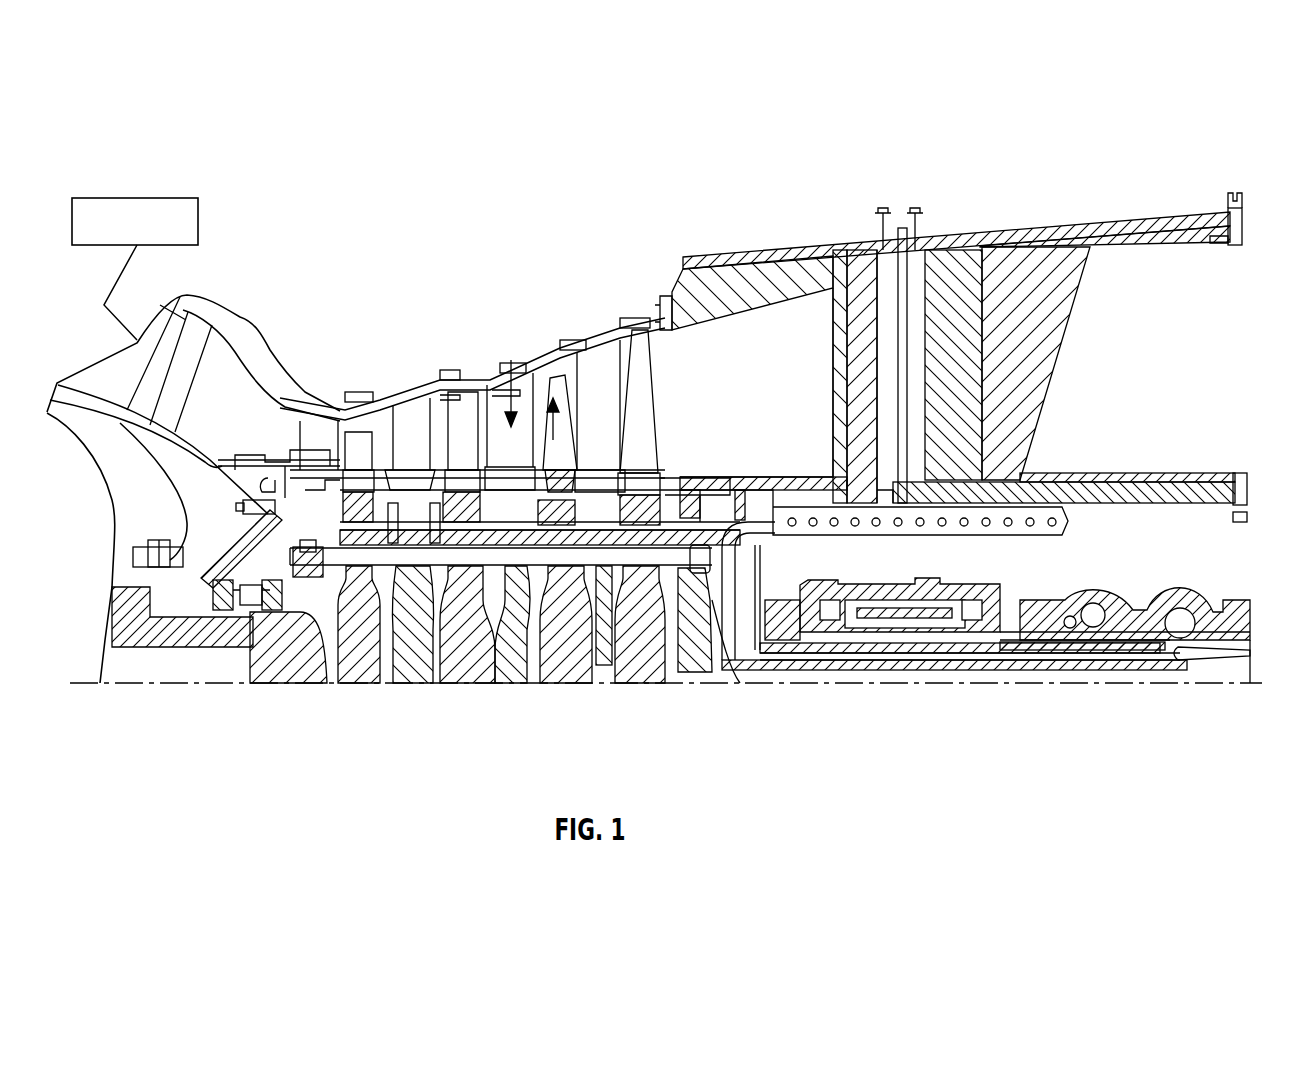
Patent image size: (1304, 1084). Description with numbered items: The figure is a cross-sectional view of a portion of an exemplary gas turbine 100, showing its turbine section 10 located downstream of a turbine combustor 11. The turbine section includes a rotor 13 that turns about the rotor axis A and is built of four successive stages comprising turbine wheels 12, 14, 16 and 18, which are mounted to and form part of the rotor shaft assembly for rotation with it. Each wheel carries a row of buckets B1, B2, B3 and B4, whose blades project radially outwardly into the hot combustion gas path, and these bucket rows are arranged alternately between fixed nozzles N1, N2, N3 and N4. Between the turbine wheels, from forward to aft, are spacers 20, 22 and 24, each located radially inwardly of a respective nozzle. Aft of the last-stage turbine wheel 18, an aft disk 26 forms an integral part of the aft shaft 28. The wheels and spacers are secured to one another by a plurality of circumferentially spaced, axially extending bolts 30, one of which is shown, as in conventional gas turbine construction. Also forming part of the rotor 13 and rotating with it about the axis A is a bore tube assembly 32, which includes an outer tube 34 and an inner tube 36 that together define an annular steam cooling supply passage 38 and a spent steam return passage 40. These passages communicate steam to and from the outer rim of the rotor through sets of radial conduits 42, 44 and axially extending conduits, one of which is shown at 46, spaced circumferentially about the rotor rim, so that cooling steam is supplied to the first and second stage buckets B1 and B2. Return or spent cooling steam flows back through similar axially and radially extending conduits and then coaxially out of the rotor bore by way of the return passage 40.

The rotor axis A is at (172, 686).
The turbine section 10 is at (404, 277).
The turbine combustor 11 is at (159, 197).
The turbine wheel 12 is at (365, 676).
The rotor 13 is at (78, 659).
The turbine wheel 14 is at (460, 671).
The turbine wheel 16 is at (565, 671).
The turbine wheel 18 is at (645, 671).
The spacer 20 is at (413, 671).
The spacer 22 is at (510, 656).
The spacer 24 is at (602, 656).
The aft disk 26 is at (697, 661).
The aft shaft 28 is at (843, 587).
The bolt 30 is at (360, 550).
The bore tube assembly 32 is at (936, 688).
The outer tube 34 is at (995, 656).
The inner tube 36 is at (1075, 671).
The annular steam cooling supply passage 38 is at (1145, 656).
The spent steam return passage 40 is at (830, 681).
The radial conduit 42 is at (740, 540).
The radial conduit 44 is at (724, 576).
The axially extending conduit 46 is at (640, 528).
The gas turbine 100 is at (784, 203).
The nozzle N1 is at (318, 420).
The bucket B1 is at (360, 432).
The nozzle N2 is at (414, 405).
The bucket B2 is at (465, 410).
The nozzle N3 is at (523, 395).
The bucket B3 is at (553, 385).
The nozzle N4 is at (600, 372).
The bucket B4 is at (640, 377).